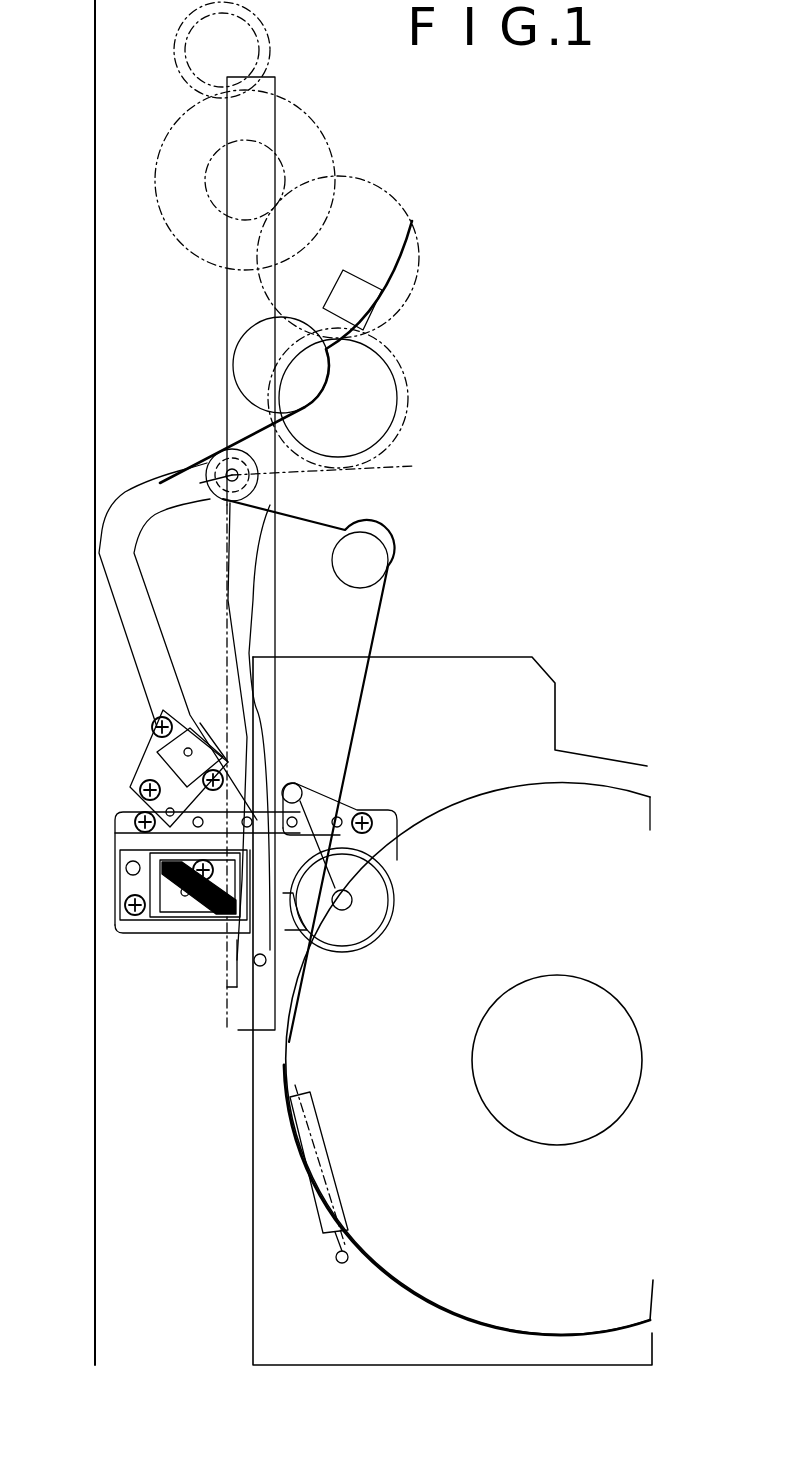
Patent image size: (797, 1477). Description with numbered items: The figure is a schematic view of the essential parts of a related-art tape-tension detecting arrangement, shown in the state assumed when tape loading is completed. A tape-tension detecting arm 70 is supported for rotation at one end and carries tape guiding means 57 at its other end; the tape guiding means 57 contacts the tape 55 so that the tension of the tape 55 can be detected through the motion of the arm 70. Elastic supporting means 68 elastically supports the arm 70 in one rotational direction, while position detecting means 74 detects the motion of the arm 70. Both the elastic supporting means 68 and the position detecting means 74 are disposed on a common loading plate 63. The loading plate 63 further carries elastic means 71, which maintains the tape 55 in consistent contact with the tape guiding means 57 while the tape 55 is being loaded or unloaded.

The tape 55 is at (252, 442).
The tape guiding means 57 is at (227, 445).
The tape-tension detecting arm 70 is at (127, 548).
The elastic supporting means 68 is at (187, 720).
The loading plate 63 is at (122, 832).
The position detecting means 74 is at (250, 890).
The elastic means 71 is at (300, 1207).